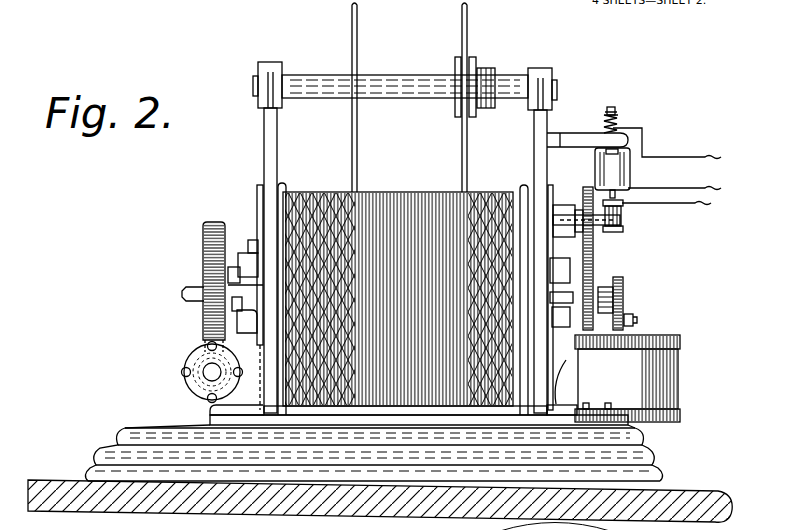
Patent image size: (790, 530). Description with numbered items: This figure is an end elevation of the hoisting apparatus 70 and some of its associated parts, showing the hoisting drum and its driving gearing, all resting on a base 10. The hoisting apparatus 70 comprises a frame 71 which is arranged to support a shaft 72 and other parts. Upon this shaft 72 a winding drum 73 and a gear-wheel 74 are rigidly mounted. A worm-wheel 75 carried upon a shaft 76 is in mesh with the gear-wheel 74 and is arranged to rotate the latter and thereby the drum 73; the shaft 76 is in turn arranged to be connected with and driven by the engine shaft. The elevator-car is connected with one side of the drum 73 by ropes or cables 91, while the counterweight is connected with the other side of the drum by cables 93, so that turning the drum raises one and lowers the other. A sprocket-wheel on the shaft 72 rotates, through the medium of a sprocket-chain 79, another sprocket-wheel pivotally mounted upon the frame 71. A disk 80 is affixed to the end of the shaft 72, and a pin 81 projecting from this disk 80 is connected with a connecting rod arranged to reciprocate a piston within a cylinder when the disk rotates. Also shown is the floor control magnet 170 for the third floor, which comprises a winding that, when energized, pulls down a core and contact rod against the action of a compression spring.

The base 10 is at (638, 461).
The hoisting apparatus 70 is at (246, 163).
The frame 71 is at (248, 247).
The shaft 72 is at (192, 303).
The winding drum 73 is at (394, 200).
The gear-wheel 74 is at (204, 237).
The worm-wheel 75 is at (206, 362).
The shaft 76 is at (209, 373).
The sprocket-chain 79 is at (593, 272).
The disk 80 is at (624, 296).
The pin 81 is at (637, 322).
The ropes or cables 91 is at (359, 53).
The cables 93 is at (468, 33).
The floor control magnet 170 is at (630, 173).